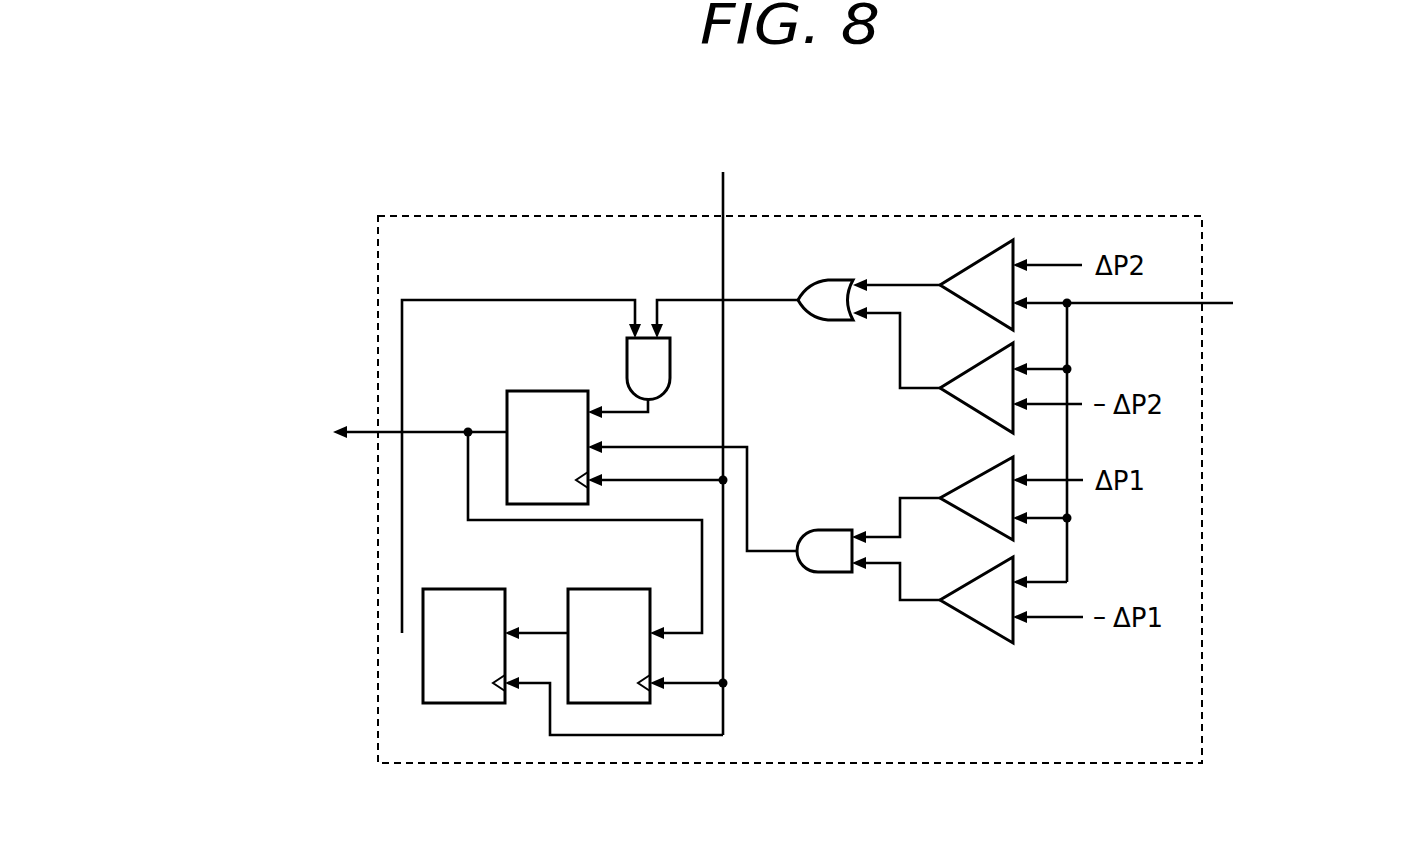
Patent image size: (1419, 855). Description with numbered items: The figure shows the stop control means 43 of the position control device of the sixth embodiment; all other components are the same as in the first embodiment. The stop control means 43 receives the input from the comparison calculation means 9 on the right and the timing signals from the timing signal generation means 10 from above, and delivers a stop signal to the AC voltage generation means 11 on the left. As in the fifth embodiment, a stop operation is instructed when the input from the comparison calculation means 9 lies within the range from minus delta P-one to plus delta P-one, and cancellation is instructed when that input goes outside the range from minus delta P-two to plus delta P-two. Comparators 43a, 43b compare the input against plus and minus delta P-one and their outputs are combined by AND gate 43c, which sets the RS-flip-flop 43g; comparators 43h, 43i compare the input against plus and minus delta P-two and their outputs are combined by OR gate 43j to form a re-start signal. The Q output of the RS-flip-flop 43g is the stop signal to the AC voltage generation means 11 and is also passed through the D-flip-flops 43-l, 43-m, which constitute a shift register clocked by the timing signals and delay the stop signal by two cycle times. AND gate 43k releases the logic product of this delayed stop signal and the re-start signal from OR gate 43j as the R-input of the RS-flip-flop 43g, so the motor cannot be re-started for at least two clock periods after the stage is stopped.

The stop control means 43 is at (1123, 214).
The comparator 43a is at (975, 580).
The comparator 43b is at (967, 484).
The AND gate 43c is at (845, 528).
The RS-flip-flop 43g is at (527, 390).
The comparator 43h is at (965, 271).
The comparator 43i is at (974, 368).
The OR gate 43j is at (845, 279).
The AND gate 43k is at (620, 361).
The D-flip-flop 43-l is at (617, 589).
The D-flip-flop 43-m is at (472, 589).
The comparison calculation means 9 is at (1215, 304).
The timing signal generation means 10 is at (717, 417).
The AC voltage generation means 11 is at (331, 421).